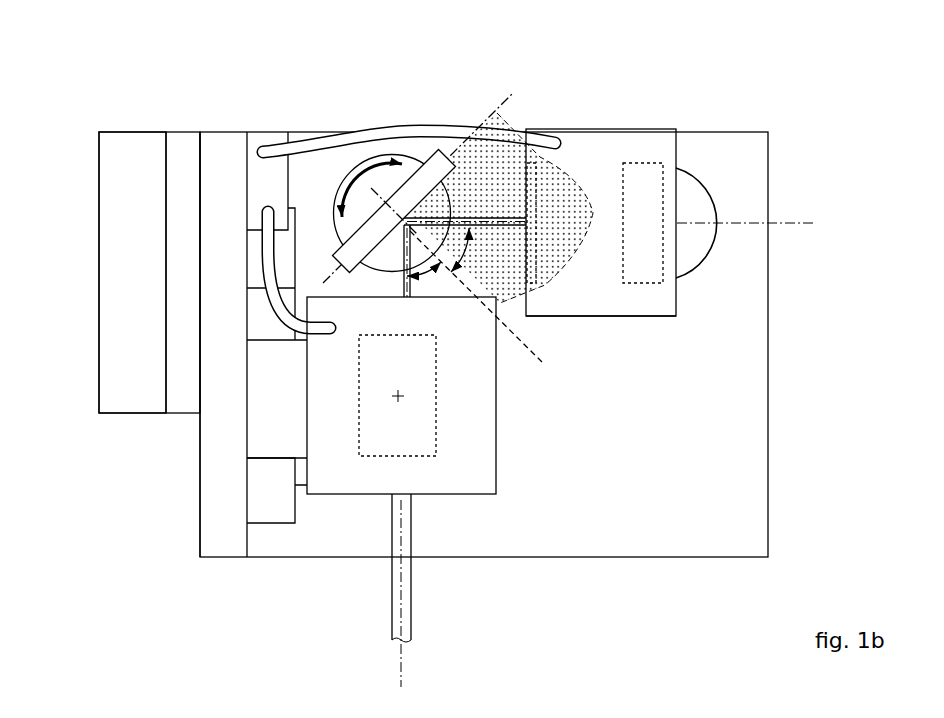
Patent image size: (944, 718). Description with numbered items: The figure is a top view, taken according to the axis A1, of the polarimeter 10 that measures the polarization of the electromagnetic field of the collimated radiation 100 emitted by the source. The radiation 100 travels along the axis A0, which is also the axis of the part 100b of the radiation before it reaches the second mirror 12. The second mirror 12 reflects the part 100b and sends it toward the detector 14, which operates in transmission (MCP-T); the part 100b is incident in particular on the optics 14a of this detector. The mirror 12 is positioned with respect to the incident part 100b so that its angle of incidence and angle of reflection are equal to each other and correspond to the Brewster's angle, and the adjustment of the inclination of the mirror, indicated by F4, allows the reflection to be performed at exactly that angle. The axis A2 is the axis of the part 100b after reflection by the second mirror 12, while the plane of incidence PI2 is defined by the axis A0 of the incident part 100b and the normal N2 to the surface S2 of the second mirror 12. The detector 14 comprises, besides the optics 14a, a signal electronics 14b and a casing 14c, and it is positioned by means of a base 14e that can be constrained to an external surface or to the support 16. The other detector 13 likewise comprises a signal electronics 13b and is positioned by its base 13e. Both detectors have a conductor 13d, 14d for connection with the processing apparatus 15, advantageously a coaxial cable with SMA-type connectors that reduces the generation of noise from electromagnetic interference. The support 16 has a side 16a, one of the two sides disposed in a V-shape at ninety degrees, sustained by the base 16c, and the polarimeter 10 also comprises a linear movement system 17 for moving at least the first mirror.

The polarimeter 10 is at (231, 60).
The support 16 is at (181, 117).
The side of the support 16a is at (222, 167).
The base of the support 16c is at (133, 213).
The processing apparatus 15 is at (401, 213).
The conductor 14d is at (388, 137).
The conductor 13d is at (269, 264).
The base of the detector 13e is at (260, 431).
The linear movement system 17 is at (261, 502).
The surface of the second mirror S2 is at (502, 180).
The plane of incidence PI2 is at (508, 160).
The second mirror 12 is at (440, 145).
The angle of inclination adjustment of the second mirror F4 is at (360, 175).
The part of the radiation 100b is at (401, 284).
The normal to the surface of the second mirror N2 is at (536, 353).
The detector 13 is at (433, 419).
The signal electronics 13b is at (372, 437).
The axis A1 is at (397, 396).
The collimated radiation 100 is at (408, 590).
The axis A0 is at (400, 661).
The detector in transmission 14 is at (685, 210).
The optic 14a is at (533, 191).
The signal electronics 14b is at (651, 175).
The casing 14c is at (663, 307).
The base of the detector 14e is at (697, 199).
The axis A2 is at (804, 222).